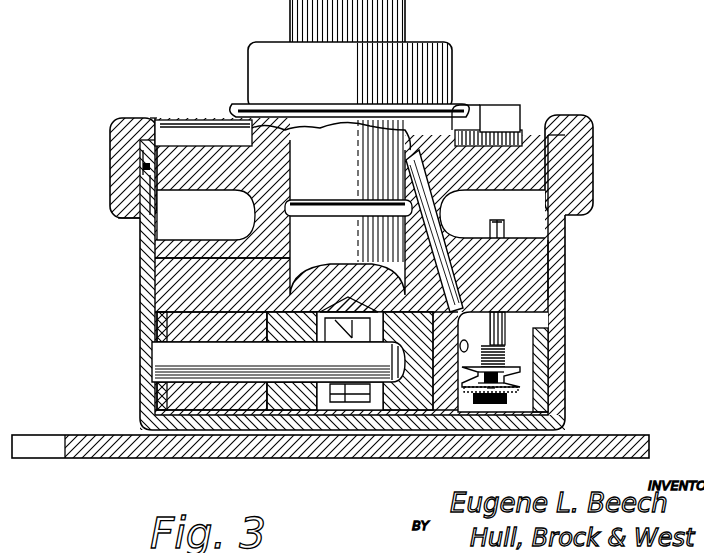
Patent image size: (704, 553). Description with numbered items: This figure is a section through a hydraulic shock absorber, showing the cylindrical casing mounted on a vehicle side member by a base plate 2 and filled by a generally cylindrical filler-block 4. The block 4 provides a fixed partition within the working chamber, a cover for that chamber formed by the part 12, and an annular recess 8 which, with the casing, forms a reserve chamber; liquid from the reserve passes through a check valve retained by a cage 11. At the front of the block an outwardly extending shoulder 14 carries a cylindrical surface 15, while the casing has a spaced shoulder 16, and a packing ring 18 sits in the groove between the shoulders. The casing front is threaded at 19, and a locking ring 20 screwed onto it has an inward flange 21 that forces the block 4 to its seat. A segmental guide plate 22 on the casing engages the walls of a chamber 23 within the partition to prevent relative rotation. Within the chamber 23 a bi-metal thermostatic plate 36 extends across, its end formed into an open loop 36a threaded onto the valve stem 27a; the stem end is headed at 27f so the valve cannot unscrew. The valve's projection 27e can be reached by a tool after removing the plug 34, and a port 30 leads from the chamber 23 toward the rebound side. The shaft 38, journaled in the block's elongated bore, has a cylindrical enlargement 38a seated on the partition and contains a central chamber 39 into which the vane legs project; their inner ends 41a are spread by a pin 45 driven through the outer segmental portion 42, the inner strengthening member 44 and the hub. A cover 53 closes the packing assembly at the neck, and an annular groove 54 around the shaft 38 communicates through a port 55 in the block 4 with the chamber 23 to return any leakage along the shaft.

The base plate 2 is at (122, 460).
The filler-block 4 is at (155, 286).
The annular recess 8 is at (206, 215).
The cage 11 is at (313, 22).
The part of the block 12 is at (565, 270).
The shoulder 14 is at (170, 120).
The cylindrical surface 15 is at (143, 157).
The shoulder 16 is at (121, 217).
The packing ring 18 is at (143, 182).
The threaded surface 19 is at (568, 189).
The locking ring 20 is at (110, 142).
The flange 21 is at (160, 105).
The segmental guide plate 22 is at (533, 356).
The chamber 23 is at (525, 318).
The threaded stem 27a is at (487, 400).
The projection 27e is at (502, 226).
The headed end 27f is at (494, 400).
The port 30 is at (470, 346).
The removable plug 34 is at (497, 130).
The bi-metal thermostatic plate 36 is at (515, 391).
The open loop 36a is at (519, 379).
The shaft 38 is at (331, 206).
The cylindrical enlargement 38a is at (300, 404).
The chamber 39 is at (350, 330).
The inner ends of the side members 41a is at (342, 408).
The outer segmental portion 42 is at (157, 330).
The inner strengthening member 44 is at (190, 397).
The pin 45 is at (278, 362).
The cover 53 is at (350, 75).
The annular groove 54 is at (336, 212).
The port 55 is at (420, 232).